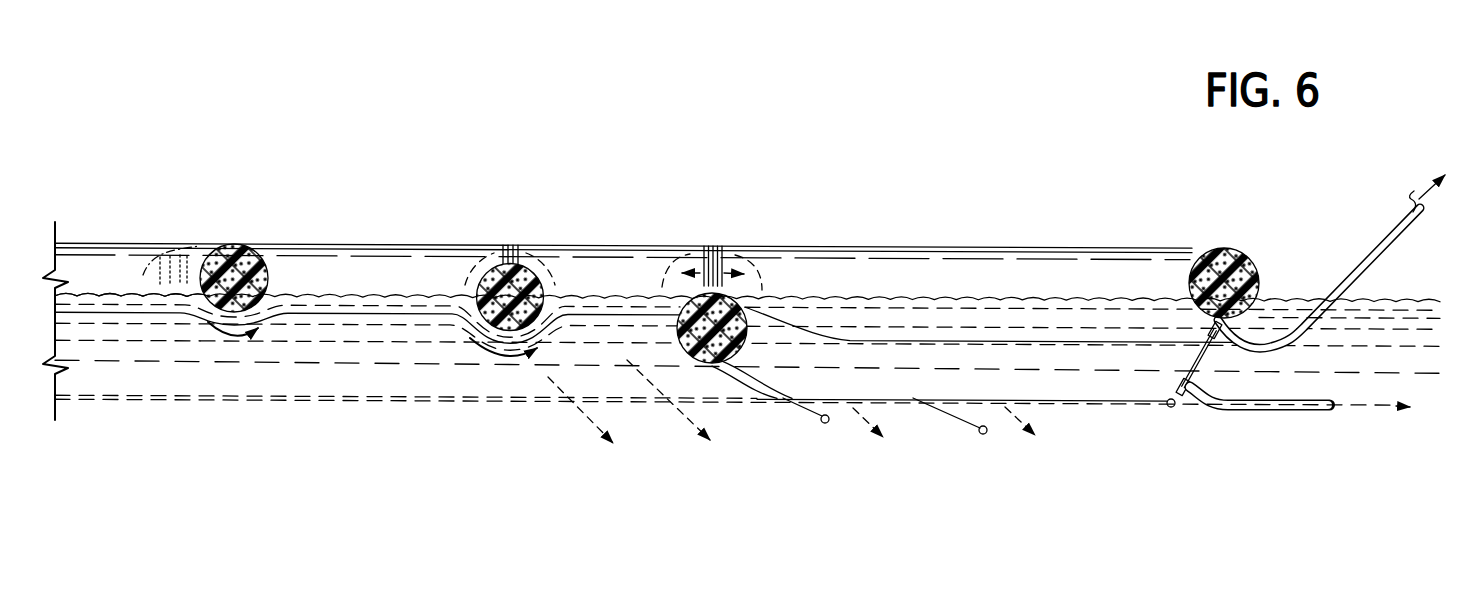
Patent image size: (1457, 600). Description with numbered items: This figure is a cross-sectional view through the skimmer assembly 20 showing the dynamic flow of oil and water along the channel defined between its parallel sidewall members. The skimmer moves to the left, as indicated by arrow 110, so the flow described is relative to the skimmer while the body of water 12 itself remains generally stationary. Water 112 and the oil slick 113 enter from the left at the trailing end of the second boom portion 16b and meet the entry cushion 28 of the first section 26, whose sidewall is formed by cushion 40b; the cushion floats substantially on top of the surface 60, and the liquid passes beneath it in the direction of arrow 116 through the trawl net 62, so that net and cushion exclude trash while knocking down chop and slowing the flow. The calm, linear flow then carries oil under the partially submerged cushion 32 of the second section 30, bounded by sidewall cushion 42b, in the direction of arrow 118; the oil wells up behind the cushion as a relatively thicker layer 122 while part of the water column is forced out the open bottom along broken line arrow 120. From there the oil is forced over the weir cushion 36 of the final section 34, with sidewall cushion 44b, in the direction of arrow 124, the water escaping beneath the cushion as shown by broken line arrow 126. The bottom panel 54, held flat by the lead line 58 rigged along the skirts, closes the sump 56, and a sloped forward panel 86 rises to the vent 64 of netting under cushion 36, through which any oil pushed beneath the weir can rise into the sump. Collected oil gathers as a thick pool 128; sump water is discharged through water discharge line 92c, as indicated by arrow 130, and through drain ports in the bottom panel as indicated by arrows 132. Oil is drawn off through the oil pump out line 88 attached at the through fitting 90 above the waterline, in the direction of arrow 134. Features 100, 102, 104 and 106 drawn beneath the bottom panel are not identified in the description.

The body of water 12 is at (1369, 300).
The second elongate boom portion 16b is at (103, 265).
The skimmer assembly 20 is at (1122, 206).
The first section 26 is at (367, 240).
The floating cushion 28 is at (207, 251).
The second section 30 is at (591, 240).
The partially submerged cushion 32 is at (492, 270).
The final section 34 is at (913, 242).
The mostly submerged cushion 36 is at (695, 364).
The sidewall cushion 40b is at (346, 262).
The sidewall cushion 42b is at (573, 263).
The sidewall floatation cushion 44b is at (891, 267).
The bottom panel 54 is at (1097, 400).
The sump 56 is at (1021, 290).
The lead line 58 is at (328, 402).
The surface of the body of water 60 is at (1386, 300).
The trawl net 62 is at (231, 322).
The vent 64 is at (757, 396).
The sloped forward panel 86 is at (775, 401).
The oil pump out line 88 is at (1336, 276).
The through fitting 90 is at (1190, 333).
The water discharge line 92c is at (1277, 411).
The nozzle stem 100 is at (955, 427).
The nozzle outlet 102 is at (978, 436).
The nozzle stem 104 is at (805, 413).
The nozzle outlet 106 is at (818, 424).
The arrow 110 is at (667, 160).
The water 112 is at (103, 353).
The oil slick 113 is at (91, 297).
The arrow 116 is at (237, 337).
The arrow 118 is at (470, 341).
The broken line arrow 120 is at (590, 416).
The thicker layer of oil 122 is at (645, 296).
The arrow 124 is at (728, 256).
The broken line arrow 126 is at (670, 417).
The thick pool of oil 128 is at (955, 305).
The arrow 130 is at (1370, 409).
The arrows 132 is at (890, 420).
The arrow 134 is at (1423, 195).